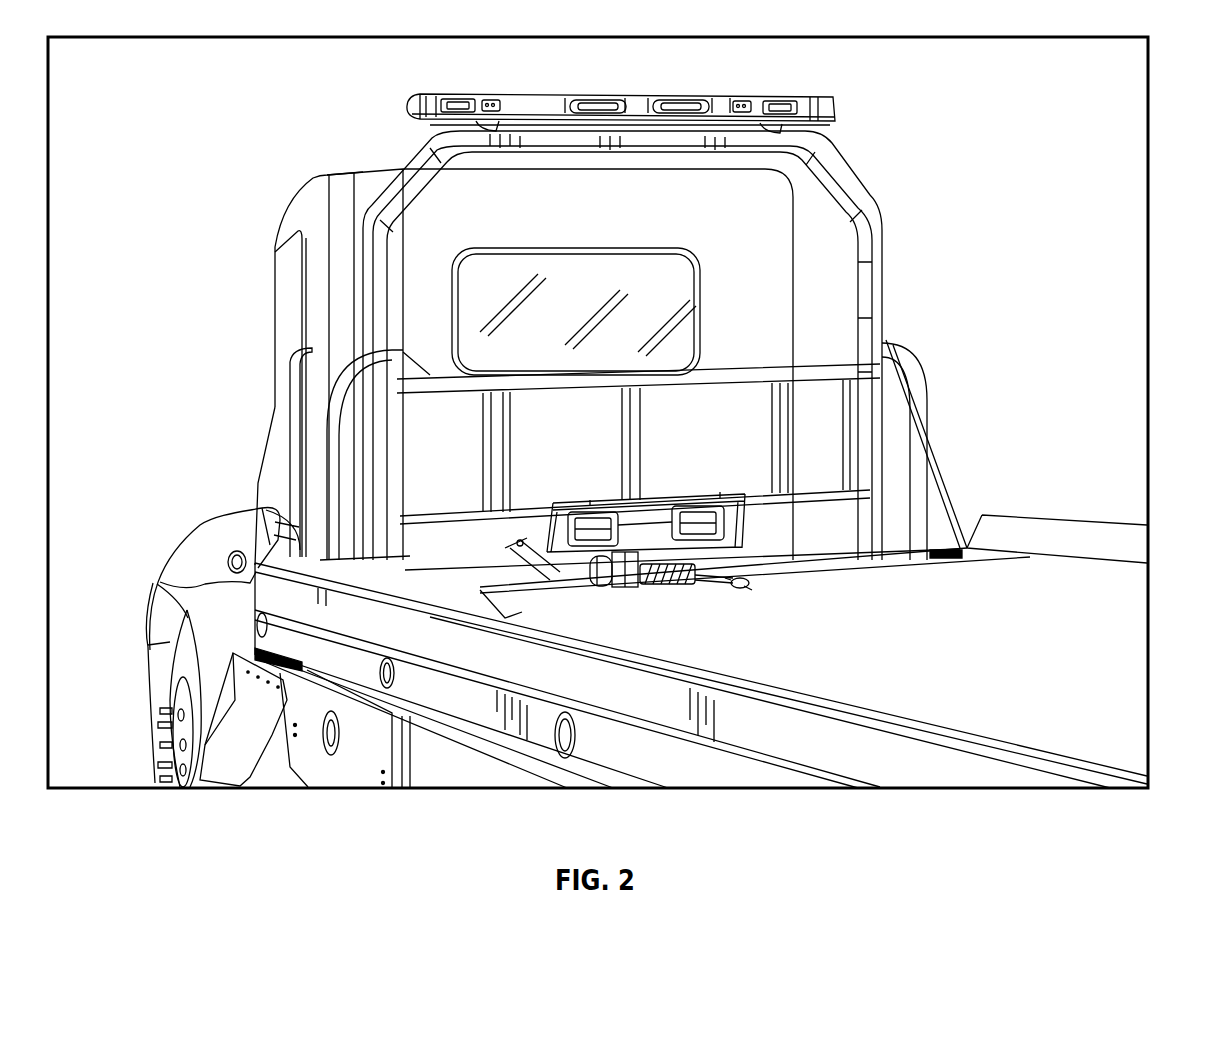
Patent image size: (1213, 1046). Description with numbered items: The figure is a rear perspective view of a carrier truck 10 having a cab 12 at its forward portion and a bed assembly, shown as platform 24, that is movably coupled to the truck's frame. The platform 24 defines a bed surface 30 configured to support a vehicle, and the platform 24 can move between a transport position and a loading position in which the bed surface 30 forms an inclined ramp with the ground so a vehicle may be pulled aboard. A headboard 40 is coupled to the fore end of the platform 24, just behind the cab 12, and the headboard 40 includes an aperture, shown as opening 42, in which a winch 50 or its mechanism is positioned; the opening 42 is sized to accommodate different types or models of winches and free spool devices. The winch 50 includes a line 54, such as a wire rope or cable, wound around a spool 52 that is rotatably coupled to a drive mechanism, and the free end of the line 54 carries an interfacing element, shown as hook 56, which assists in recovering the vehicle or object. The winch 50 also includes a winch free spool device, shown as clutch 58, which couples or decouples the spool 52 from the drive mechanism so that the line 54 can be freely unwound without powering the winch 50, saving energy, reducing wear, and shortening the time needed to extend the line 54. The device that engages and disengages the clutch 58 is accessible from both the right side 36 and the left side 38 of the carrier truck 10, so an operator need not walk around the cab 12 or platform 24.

The carrier truck 10 is at (1010, 97).
The cab 12 is at (313, 182).
The platform 24 is at (722, 604).
The bed surface 30 is at (1103, 618).
The right side 36 is at (1083, 540).
The left side 38 is at (873, 717).
The headboard 40 is at (886, 292).
The opening 42 is at (745, 516).
The winch 50 is at (660, 555).
The spool 52 is at (643, 588).
The line 54 is at (678, 585).
The hook 56 is at (740, 592).
The clutch 58 is at (605, 587).